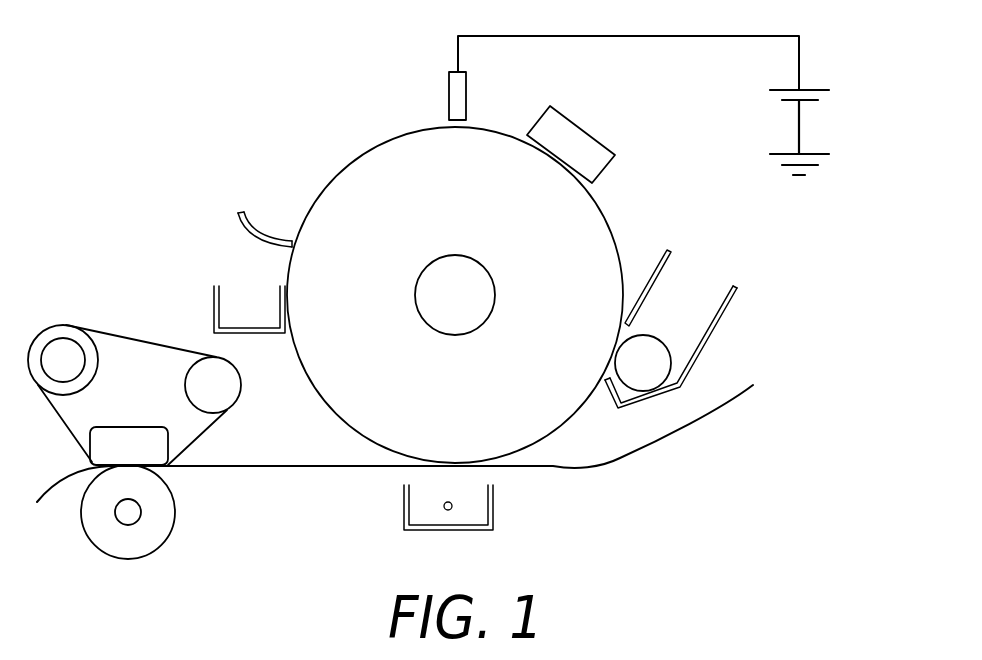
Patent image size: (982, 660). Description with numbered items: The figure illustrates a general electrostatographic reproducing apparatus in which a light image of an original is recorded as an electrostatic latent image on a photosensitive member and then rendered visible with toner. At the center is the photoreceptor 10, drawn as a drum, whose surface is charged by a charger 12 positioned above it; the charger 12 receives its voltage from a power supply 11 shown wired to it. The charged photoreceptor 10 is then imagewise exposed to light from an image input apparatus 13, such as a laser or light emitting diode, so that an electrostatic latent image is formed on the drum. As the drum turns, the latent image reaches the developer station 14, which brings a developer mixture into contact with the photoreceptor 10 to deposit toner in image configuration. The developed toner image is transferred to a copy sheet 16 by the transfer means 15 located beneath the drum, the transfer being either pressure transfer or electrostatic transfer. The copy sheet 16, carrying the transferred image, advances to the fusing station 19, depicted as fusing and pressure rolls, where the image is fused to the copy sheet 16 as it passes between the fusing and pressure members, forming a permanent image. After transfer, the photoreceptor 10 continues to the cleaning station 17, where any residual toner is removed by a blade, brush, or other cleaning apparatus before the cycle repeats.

The photoreceptor 10 is at (608, 221).
The power supply 11 is at (800, 62).
The charger 12 is at (448, 97).
The image input apparatus 13 is at (585, 125).
The developer station 14 is at (683, 288).
The transfer means 15 is at (493, 505).
The copy sheet 16 is at (695, 430).
The cleaning station 17 is at (238, 250).
The fusing station 19 is at (83, 304).